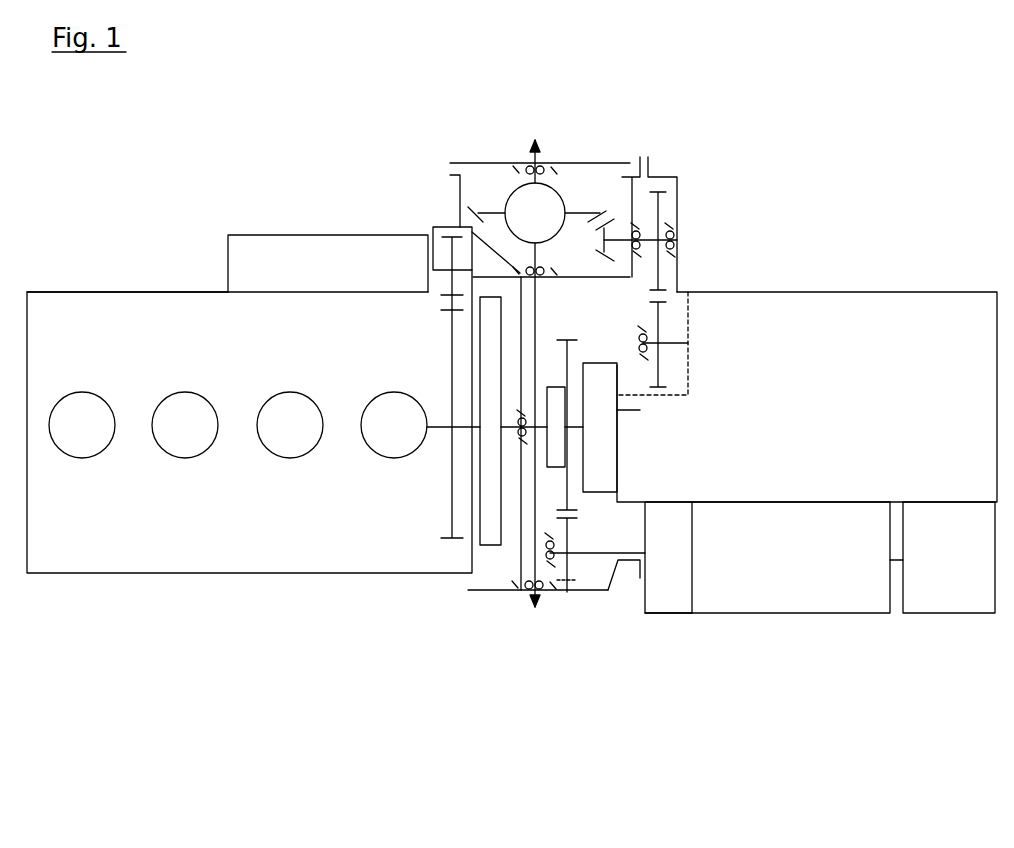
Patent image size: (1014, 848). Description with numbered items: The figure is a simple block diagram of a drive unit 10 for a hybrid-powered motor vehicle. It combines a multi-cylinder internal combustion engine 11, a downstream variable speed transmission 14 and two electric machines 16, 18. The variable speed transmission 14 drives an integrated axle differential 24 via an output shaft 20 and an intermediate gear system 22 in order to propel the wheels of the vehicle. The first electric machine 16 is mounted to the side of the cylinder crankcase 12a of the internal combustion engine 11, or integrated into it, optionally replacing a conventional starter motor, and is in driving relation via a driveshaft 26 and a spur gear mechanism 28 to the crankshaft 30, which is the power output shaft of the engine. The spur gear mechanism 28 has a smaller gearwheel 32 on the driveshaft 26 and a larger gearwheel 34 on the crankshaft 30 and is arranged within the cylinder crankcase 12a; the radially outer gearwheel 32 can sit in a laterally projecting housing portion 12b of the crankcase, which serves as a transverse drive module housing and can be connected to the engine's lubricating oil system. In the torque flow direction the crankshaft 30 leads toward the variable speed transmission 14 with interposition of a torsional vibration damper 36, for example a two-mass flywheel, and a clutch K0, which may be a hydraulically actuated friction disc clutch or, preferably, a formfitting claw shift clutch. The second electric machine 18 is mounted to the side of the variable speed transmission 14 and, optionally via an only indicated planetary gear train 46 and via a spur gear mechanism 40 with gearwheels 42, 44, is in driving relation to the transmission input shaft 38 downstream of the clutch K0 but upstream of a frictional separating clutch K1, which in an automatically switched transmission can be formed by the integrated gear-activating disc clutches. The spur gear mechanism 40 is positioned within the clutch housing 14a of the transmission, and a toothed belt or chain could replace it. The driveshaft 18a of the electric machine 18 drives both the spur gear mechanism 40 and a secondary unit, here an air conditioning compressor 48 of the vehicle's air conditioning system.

The drive unit 10 is at (811, 161).
The internal combustion engine 11 is at (141, 533).
The cylinder crankcase 12a is at (92, 292).
The housing portion 12b is at (480, 240).
The variable speed transmission 14 is at (926, 368).
The clutch housing 14a is at (567, 593).
The electric machine 16 is at (297, 237).
The electric machine 18 is at (802, 613).
The driveshaft 18a is at (647, 540).
The output shaft 20 is at (670, 340).
The intermediate gear system 22 is at (665, 208).
The axle differential 24 is at (582, 163).
The driveshaft 26 is at (444, 262).
The spur gear mechanism 28 is at (435, 310).
The crankshaft 30 is at (443, 430).
The smaller gearwheel 32 is at (445, 228).
The larger gearwheel 34 is at (452, 515).
The torsional vibration damper 36 is at (490, 556).
The transmission input shaft 38 is at (578, 422).
The spur gear mechanism 40 is at (589, 516).
The gearwheel 42 is at (571, 562).
The gearwheel 44 is at (565, 483).
The planetary gear train 46 is at (670, 613).
The air conditioning compressor 48 is at (963, 570).
The clutch K0 is at (548, 385).
The separating clutch K1 is at (617, 410).